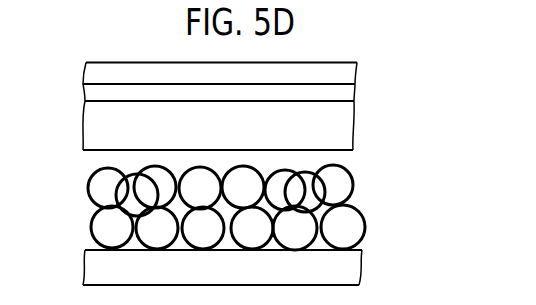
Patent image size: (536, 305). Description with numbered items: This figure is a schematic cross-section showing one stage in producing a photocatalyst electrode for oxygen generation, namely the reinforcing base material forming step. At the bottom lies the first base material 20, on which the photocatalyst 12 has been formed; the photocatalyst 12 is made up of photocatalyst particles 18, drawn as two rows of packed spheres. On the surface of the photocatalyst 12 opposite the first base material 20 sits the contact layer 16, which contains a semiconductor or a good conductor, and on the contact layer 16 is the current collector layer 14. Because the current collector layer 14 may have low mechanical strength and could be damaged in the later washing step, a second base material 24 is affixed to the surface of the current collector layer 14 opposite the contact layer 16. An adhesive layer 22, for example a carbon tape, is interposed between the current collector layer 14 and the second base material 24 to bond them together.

The photocatalyst 12 is at (236, 200).
The current collector layer 14 is at (340, 131).
The contact layer 16 is at (340, 161).
The photocatalyst particles 18 is at (112, 228).
The first base material 20 is at (347, 273).
The adhesive layer 22 is at (340, 95).
The second base material 24 is at (340, 80).